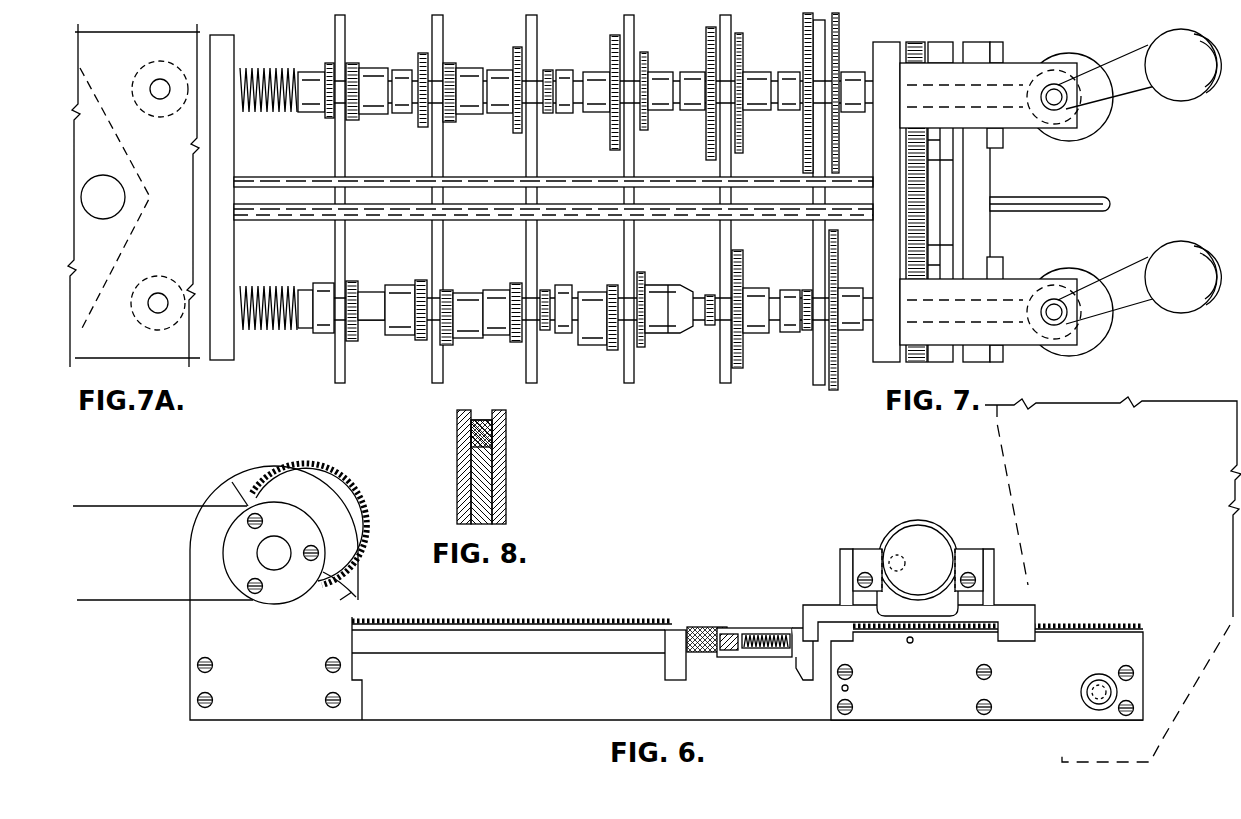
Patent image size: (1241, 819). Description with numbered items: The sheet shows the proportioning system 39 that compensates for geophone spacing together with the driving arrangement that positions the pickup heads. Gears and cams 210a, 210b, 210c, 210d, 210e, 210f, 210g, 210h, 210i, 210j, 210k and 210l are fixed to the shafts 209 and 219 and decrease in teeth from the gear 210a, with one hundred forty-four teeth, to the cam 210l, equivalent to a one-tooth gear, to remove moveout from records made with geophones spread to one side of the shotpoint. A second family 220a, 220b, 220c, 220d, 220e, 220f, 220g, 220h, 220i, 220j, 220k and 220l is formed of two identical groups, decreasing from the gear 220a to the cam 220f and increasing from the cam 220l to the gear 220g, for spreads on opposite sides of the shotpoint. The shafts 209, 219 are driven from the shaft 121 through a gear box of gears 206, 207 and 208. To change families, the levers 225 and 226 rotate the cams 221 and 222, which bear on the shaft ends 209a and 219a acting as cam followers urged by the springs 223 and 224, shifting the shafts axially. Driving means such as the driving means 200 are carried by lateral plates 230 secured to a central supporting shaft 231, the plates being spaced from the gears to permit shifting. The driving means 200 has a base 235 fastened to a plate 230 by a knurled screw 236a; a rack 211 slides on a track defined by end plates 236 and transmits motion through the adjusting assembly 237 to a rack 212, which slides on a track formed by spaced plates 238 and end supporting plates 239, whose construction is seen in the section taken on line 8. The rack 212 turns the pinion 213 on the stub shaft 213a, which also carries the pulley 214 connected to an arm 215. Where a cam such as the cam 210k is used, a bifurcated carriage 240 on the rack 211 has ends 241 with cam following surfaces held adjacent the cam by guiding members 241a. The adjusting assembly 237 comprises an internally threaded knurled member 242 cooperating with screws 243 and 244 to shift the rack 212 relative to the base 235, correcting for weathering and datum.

In FIG. 6, the section line 8— 8 is at (379, 732).
In FIG. 7, the proportioning system 39 is at (598, 265).
In FIG. 7, the shaft 121 is at (1030, 201).
In FIG. 6, the driving means 200 is at (638, 601).
In FIG. 7, the gear 206 is at (906, 238).
In FIG. 7, the gear 207 is at (916, 46).
In FIG. 7, the gear 208 is at (910, 366).
In FIG. 7A, the shaft 209 is at (155, 86).
In FIG. 7, the shaft 209 is at (285, 80).
In FIG. 7, the shaft end 209a is at (1027, 96).
In FIG. 7, the gear 210a is at (804, 40).
In FIG. 7, the gear or cam 210b is at (706, 40).
In FIG. 7, the gear or cam 210c is at (612, 44).
In FIG. 7, the gear or cam 210d is at (517, 46).
In FIG. 7, the gear or cam 210e is at (422, 52).
In FIG. 7A, the gear or cam 210f is at (134, 90).
In FIG. 7, the gear or cam 210f is at (329, 64).
In FIG. 7, the gear or cam 210g is at (806, 290).
In FIG. 7, the gear or cam 210h is at (707, 295).
In FIG. 7, the gear or cam 210i is at (612, 287).
In FIG. 7, the gear or cam 210j is at (514, 283).
In FIG. 7, the cam 210k is at (420, 281).
In FIG. 6, the cam 210k is at (950, 553).
In FIG. 7A, the cam 210l is at (134, 318).
In FIG. 7, the cam 210l is at (318, 332).
In FIG. 6, the rack 211 is at (1105, 626).
In FIG. 8, the rack 212 is at (481, 423).
In FIG. 6, the rack 212 is at (460, 614).
In FIG. 6, the pinion 213 is at (302, 491).
In FIG. 6, the shaft 213a is at (262, 557).
In FIG. 6, the pulley 214 is at (274, 553).
In FIG. 6, the arm 215 is at (125, 508).
In FIG. 7A, the shaft 219 is at (156, 298).
In FIG. 7, the shaft 219 is at (296, 295).
In FIG. 7, the shaft end 219a is at (1027, 311).
In FIG. 7, the gear 220a is at (841, 52).
In FIG. 7, the gear or cam 220b is at (742, 60).
In FIG. 7, the gear or cam 220c is at (646, 62).
In FIG. 7, the gear or cam 220d is at (549, 69).
In FIG. 7, the gear or cam 220e is at (449, 63).
In FIG. 7, the cam 220f is at (352, 63).
In FIG. 7, the gear 220g is at (832, 388).
In FIG. 7, the gear or cam 220h is at (744, 350).
In FIG. 7, the gear or cam 220i is at (643, 347).
In FIG. 7, the gear or cam 220j is at (544, 331).
In FIG. 7, the gear or cam 220k is at (449, 345).
In FIG. 7, the cam 220l is at (353, 341).
In FIG. 7, the cam 221 is at (1092, 62).
In FIG. 7, the cam 222 is at (1100, 334).
In FIG. 7, the spring 223 is at (256, 70).
In FIG. 7, the spring 224 is at (255, 290).
In FIG. 7, the lever 225 is at (1167, 93).
In FIG. 7, the lever 226 is at (1170, 300).
In FIG. 7A, the lateral plate 230 is at (140, 231).
In FIG. 7, the lateral plate 230 is at (430, 168).
In FIG. 6, the lateral plate 230 is at (1166, 745).
In FIG. 7A, the central supporting shaft 231 is at (104, 178).
In FIG. 7, the central supporting shaft 231 is at (506, 204).
In FIG. 8, the base 235 is at (494, 494).
In FIG. 6, the base 235 is at (810, 717).
In FIG. 6, the end plate 236 is at (1058, 721).
In FIG. 6, the screw 236a is at (1084, 697).
In FIG. 6, the adjusting assembly 237 is at (712, 629).
In FIG. 6, the plate 238 is at (651, 657).
In FIG. 8, the end supporting plate 239 is at (458, 461).
In FIG. 6, the end supporting plate 239 is at (358, 548).
In FIG. 6, the bifurcated carriage 240 is at (996, 597).
In FIG. 6, the bifurcated end 241 is at (840, 562).
In FIG. 6, the guiding member 241a is at (863, 556).
In FIG. 6, the internally threaded member 242 is at (691, 626).
In FIG. 6, the screw 243 is at (733, 651).
In FIG. 6, the screw 244 is at (781, 649).